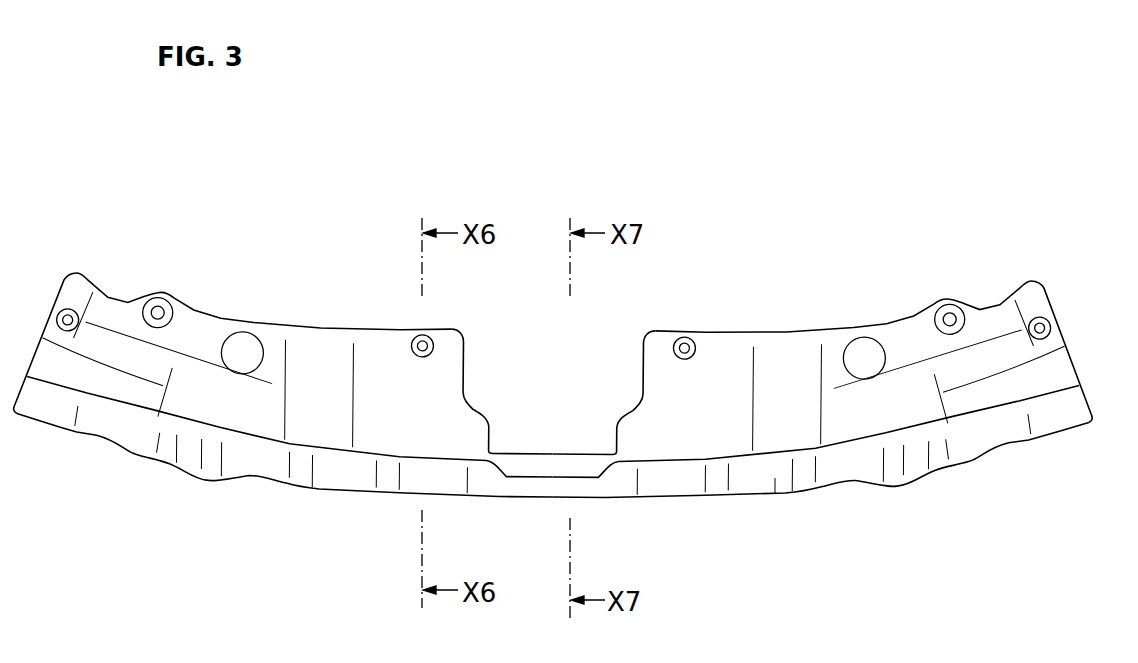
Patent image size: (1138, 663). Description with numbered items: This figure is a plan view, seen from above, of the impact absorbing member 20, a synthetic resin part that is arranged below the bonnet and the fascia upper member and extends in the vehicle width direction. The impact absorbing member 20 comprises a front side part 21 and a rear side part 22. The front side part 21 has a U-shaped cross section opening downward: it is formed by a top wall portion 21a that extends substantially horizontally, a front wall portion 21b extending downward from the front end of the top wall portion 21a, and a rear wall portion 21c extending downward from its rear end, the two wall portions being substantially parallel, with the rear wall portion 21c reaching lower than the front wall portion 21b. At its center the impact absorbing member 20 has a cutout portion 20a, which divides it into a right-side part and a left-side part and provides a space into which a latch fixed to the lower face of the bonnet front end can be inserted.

The impact absorbing member 20 is at (907, 212).
The cutout portion 20a is at (553, 418).
The front side part 21 is at (552, 418).
The top wall portion 21a is at (552, 452).
The front wall portion 21b is at (680, 498).
The rear wall portion 21c is at (685, 458).
The rear side part 22 is at (316, 340).